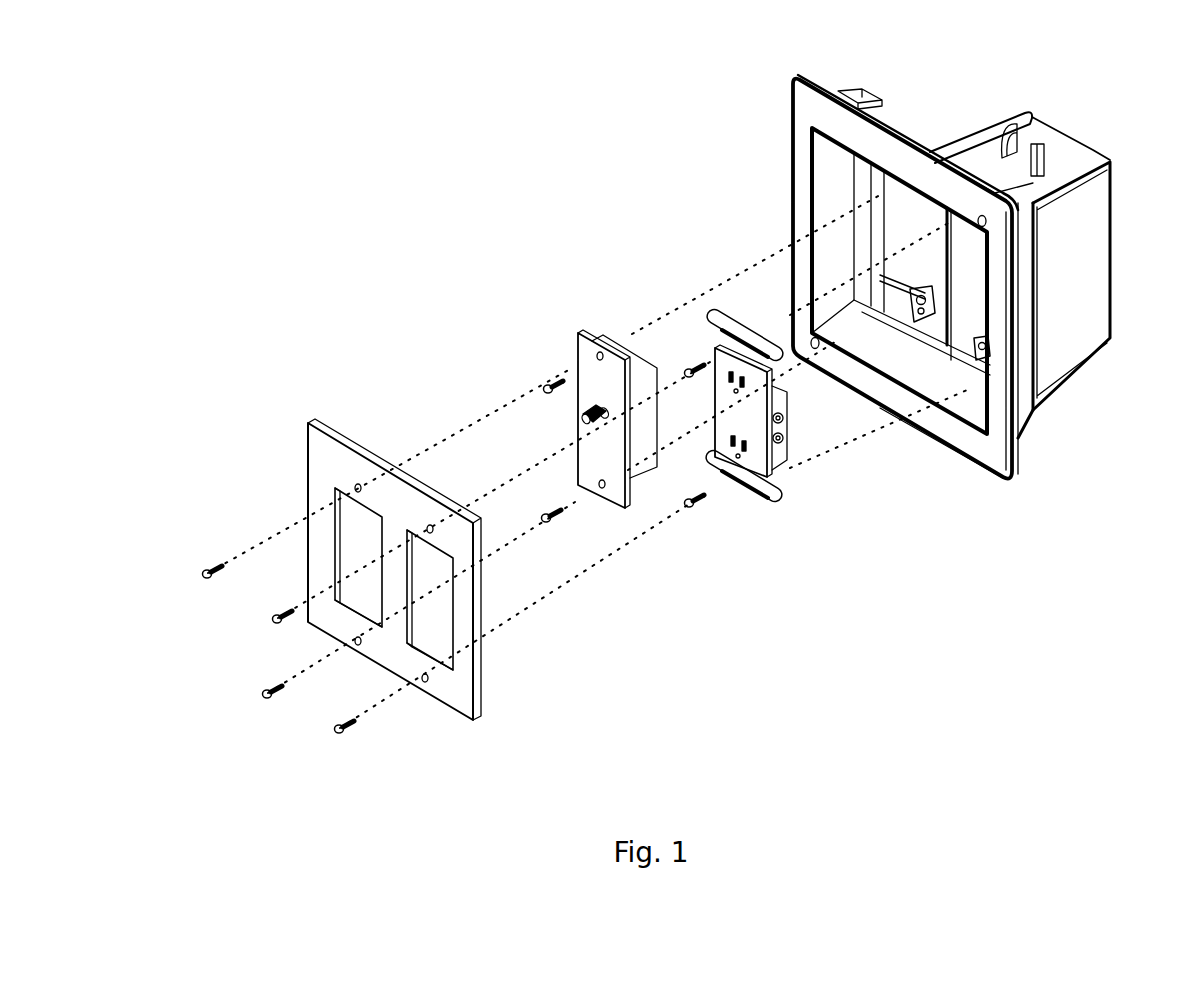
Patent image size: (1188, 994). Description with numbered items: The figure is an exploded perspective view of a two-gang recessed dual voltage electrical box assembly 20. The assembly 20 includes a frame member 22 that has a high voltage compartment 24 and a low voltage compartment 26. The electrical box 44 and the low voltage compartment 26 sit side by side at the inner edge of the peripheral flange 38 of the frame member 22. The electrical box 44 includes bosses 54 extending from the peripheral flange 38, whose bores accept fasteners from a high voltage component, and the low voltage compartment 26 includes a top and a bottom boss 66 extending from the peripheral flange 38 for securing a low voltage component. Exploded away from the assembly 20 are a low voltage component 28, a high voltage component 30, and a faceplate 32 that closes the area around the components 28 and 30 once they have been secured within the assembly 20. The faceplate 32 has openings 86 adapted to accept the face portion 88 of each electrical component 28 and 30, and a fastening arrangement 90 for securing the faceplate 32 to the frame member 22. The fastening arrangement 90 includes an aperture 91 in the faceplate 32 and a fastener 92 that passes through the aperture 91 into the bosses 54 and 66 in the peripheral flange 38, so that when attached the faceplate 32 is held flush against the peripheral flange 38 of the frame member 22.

The recessed electrical box assembly 20 is at (728, 128).
The frame member 22 is at (905, 133).
The high voltage compartment 24 is at (955, 307).
The low voltage compartment 26 is at (899, 227).
The low voltage component 28 is at (607, 337).
The high voltage component 30 is at (757, 501).
The faceplate 32 is at (477, 681).
The peripheral flange 38 is at (878, 236).
The electrical box 44 is at (1085, 152).
The bosses 54 is at (977, 344).
The boss 66 is at (921, 300).
The openings 86 is at (441, 608).
The face portion 88 is at (589, 466).
The fastening arrangement 90 is at (206, 548).
The aperture 91 is at (359, 484).
The fastener 92 is at (210, 581).